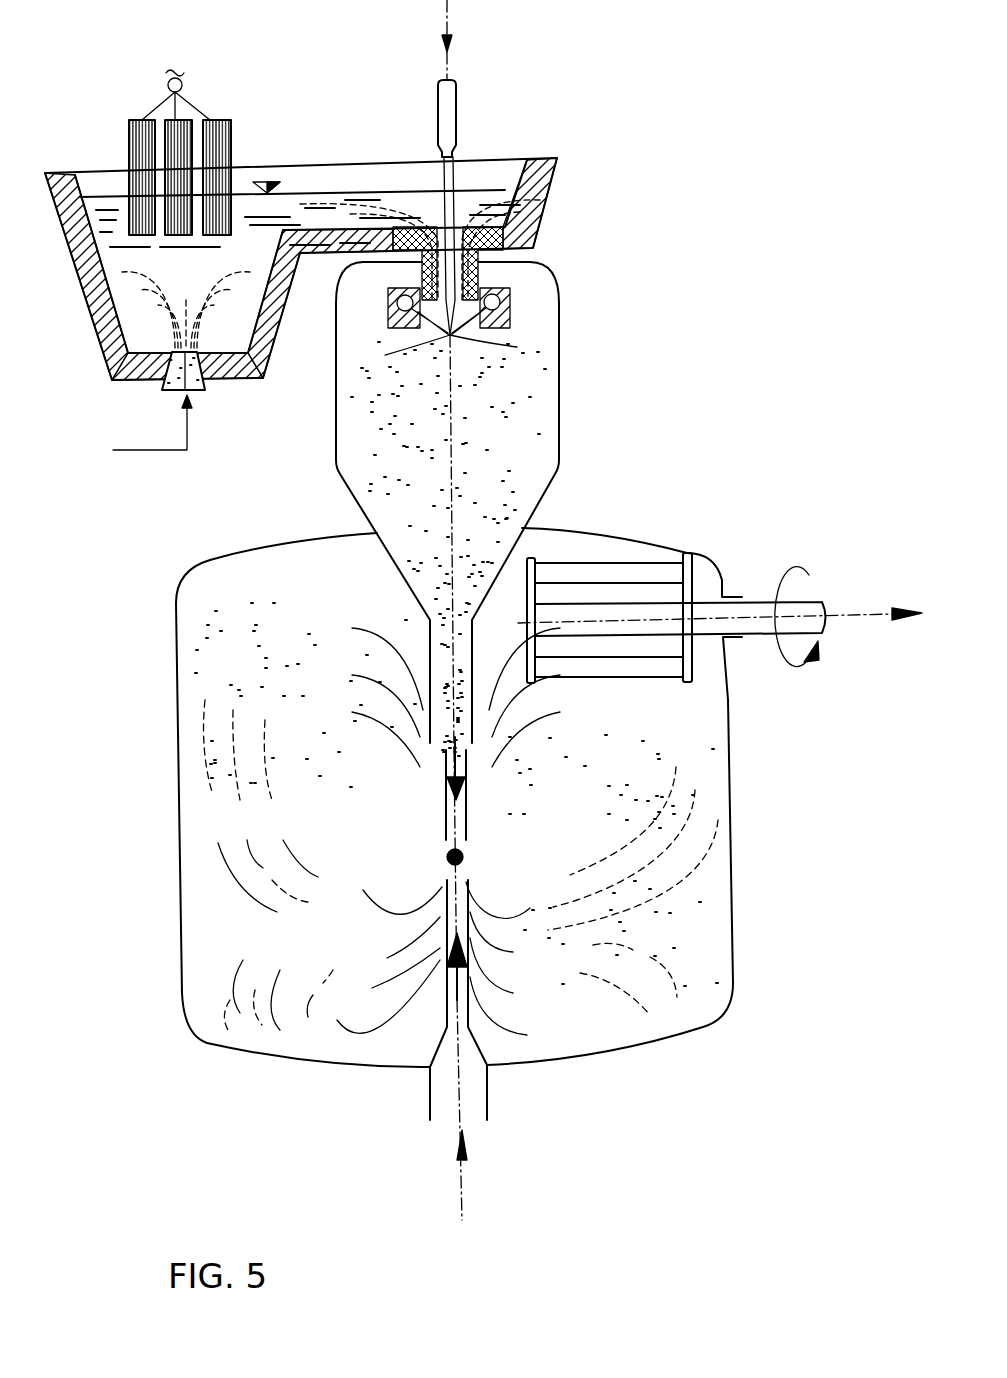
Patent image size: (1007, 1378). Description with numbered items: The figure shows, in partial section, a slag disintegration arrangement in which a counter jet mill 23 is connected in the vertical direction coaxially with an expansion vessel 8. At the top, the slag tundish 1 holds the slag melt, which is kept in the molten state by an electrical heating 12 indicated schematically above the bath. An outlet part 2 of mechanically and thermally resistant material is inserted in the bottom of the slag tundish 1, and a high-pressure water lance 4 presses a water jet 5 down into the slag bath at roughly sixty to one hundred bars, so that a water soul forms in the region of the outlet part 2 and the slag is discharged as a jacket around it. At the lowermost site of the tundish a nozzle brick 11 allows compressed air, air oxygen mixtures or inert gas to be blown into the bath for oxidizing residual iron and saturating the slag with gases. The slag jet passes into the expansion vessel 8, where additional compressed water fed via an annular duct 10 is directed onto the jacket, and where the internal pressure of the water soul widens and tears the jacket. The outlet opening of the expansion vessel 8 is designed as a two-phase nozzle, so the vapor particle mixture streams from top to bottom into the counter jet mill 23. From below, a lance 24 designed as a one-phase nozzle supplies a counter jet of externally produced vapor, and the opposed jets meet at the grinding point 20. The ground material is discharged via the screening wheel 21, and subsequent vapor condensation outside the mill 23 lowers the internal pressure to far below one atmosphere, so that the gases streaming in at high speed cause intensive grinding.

The slag tundish 1 is at (532, 220).
The outlet part 2 is at (497, 249).
The high-pressure water lance 4 is at (452, 115).
The water jet 5 is at (443, 173).
The expansion vessel 8 is at (558, 373).
The annular duct 10 is at (510, 305).
The nozzle brick 11 is at (203, 388).
The electrical heating 12 is at (215, 150).
The grinding point 20 is at (463, 860).
The screening wheel 21 is at (607, 572).
The counter jet mill 23 is at (728, 785).
The lance 24 is at (470, 1093).